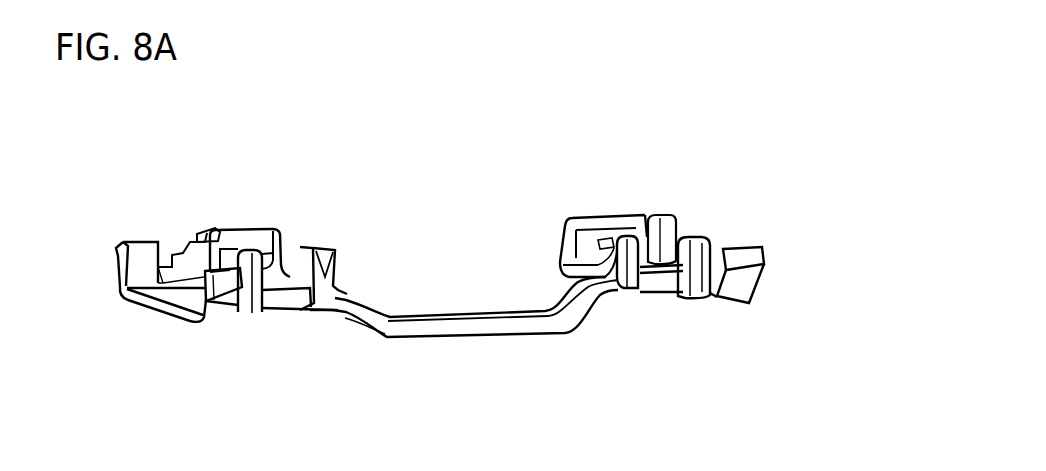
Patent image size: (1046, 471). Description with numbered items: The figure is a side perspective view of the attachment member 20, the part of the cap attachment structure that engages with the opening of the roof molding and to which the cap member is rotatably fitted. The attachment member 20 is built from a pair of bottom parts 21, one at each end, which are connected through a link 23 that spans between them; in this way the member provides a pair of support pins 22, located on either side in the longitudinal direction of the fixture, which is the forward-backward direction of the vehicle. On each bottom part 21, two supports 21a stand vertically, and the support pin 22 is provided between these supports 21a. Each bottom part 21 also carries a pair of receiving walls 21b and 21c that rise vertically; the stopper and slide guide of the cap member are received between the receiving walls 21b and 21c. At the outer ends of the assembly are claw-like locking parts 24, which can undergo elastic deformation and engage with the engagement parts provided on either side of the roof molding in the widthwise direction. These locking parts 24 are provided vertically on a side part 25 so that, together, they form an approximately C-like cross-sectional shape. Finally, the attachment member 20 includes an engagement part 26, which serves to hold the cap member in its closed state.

The attachment member 20 is at (537, 129).
The bottom part 21 is at (275, 300).
The support 21a is at (283, 230).
The receiving wall 21b is at (317, 292).
The receiving wall 21c is at (257, 310).
The support pin 22 is at (232, 240).
The link 23 is at (457, 323).
The locking part 24 is at (119, 253).
The side part 25 is at (177, 303).
The engagement part 26 is at (333, 250).